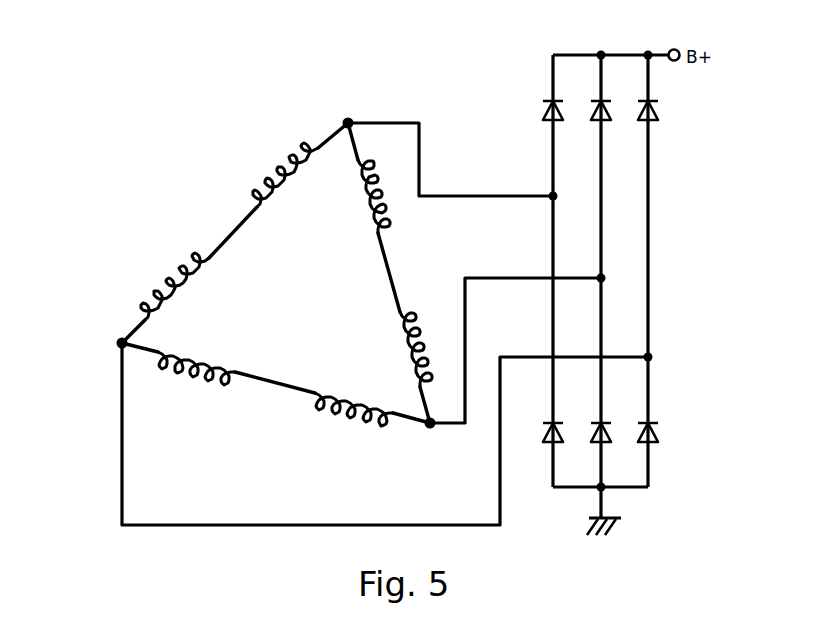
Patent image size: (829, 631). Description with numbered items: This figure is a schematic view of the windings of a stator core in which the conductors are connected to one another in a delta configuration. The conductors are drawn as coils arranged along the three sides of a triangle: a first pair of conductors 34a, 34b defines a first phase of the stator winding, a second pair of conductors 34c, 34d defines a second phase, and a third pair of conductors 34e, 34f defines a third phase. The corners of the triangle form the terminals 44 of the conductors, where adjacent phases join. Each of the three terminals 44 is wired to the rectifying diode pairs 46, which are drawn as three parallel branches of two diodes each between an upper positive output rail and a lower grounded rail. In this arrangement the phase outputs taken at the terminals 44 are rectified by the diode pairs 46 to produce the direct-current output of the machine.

The terminals 44 is at (347, 121).
The rectifying diode pairs 46 is at (600, 82).
The conductor 34a is at (172, 280).
The conductor 34b is at (283, 170).
The conductor 34c is at (383, 199).
The conductor 34d is at (423, 350).
The conductor 34e is at (352, 406).
The conductor 34f is at (207, 379).